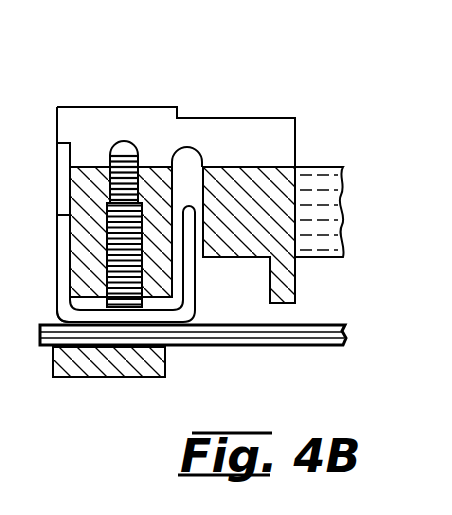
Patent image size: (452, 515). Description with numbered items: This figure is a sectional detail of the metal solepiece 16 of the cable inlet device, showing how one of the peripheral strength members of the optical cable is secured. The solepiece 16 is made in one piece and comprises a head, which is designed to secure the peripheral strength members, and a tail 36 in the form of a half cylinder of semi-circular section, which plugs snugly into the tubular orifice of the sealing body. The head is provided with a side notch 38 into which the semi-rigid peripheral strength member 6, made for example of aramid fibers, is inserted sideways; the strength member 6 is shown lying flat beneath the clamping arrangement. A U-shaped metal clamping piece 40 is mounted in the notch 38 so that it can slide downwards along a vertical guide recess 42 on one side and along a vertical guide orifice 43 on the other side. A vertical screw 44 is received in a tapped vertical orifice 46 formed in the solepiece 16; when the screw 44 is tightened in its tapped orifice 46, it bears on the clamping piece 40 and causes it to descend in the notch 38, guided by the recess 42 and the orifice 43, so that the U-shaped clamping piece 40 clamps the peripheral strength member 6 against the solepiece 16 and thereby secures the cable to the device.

The peripheral strength member 6 is at (297, 350).
The metal solepiece 16 is at (344, 118).
The tail 36 is at (323, 166).
The side notch 38 is at (50, 312).
The U-shaped metal clamping piece 40 is at (188, 304).
The vertical guide recess 42 is at (56, 163).
The vertical guide orifice 43 is at (188, 187).
The vertical screw 44 is at (118, 285).
The tapped vertical orifice 46 is at (118, 156).